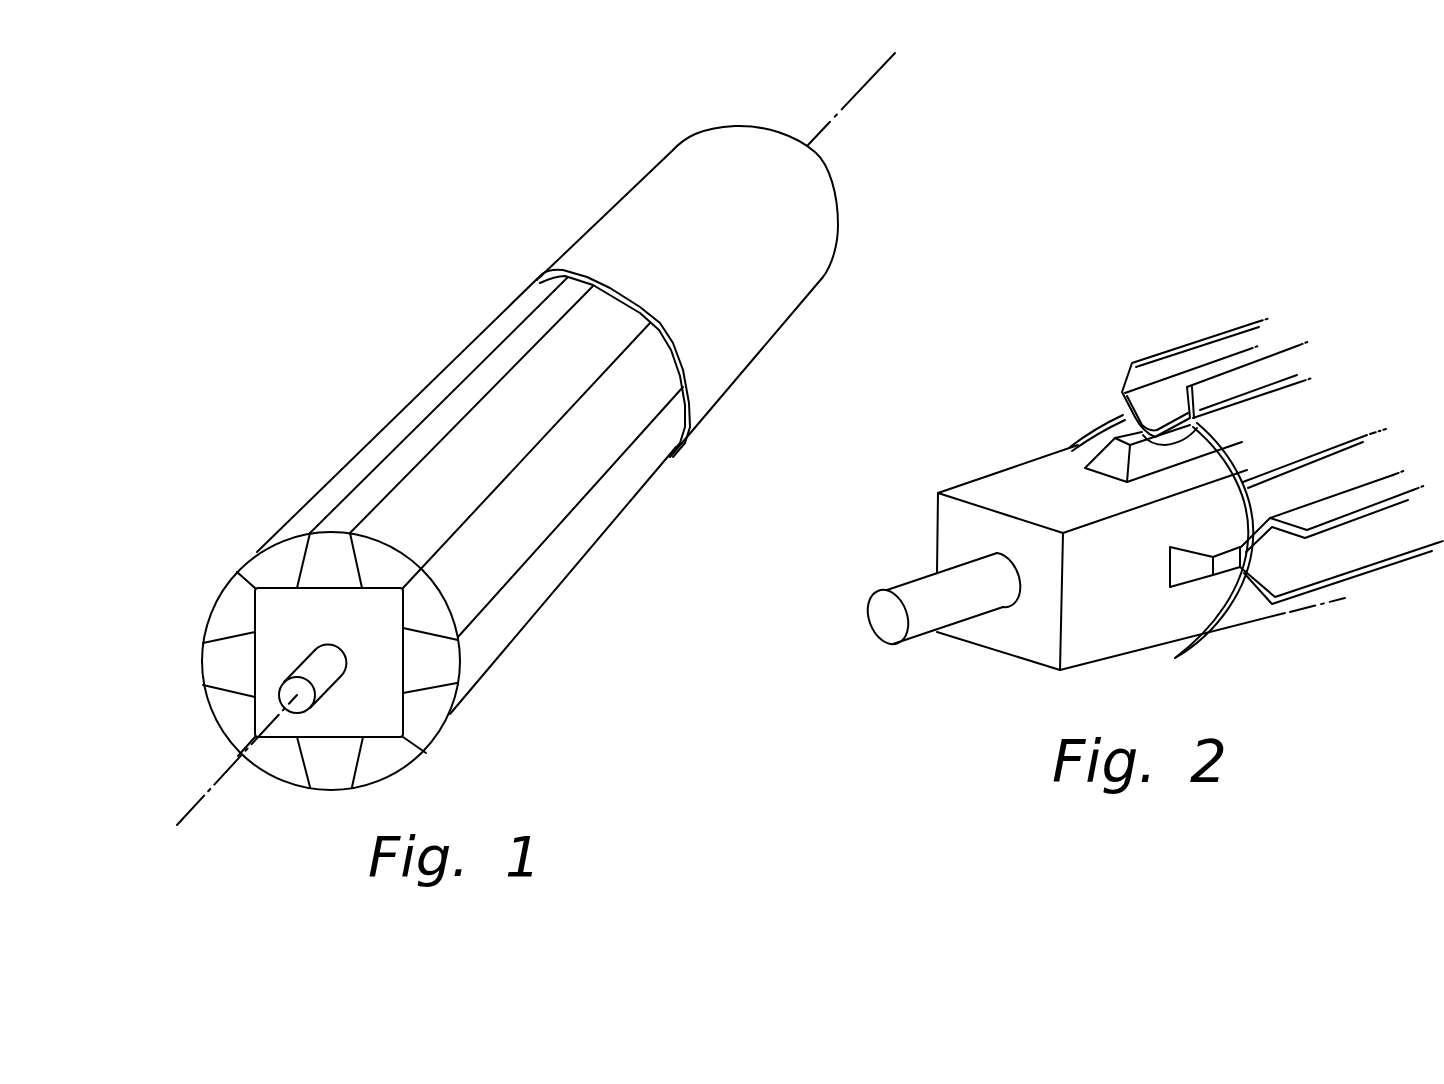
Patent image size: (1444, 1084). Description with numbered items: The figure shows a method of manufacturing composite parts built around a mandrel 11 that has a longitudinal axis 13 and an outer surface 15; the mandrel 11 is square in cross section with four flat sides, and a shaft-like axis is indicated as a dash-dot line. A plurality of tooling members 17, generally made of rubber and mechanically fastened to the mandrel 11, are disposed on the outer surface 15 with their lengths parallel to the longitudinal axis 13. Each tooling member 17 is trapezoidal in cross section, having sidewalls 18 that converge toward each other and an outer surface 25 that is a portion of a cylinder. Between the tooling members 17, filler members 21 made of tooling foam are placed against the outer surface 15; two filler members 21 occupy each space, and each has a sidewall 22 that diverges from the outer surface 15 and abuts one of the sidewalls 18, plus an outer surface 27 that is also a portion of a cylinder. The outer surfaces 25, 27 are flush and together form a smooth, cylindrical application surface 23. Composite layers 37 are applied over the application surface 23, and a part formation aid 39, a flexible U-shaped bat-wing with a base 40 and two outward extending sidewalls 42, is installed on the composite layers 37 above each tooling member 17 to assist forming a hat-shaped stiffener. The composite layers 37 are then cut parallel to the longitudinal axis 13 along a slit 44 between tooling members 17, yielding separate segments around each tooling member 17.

In FIG. 1, the mandrel 11 is at (410, 728).
In FIG. 2, the mandrel 11 is at (997, 653).
In FIG. 1, the longitudinal axis 13 is at (866, 81).
In FIG. 1, the outer surface 15 is at (455, 713).
In FIG. 2, the outer surface 15 is at (1105, 642).
In FIG. 1, the tooling members 17 is at (318, 550).
In FIG. 2, the tooling members 17 is at (1098, 452).
In FIG. 1, the sidewalls 18 is at (440, 683).
In FIG. 2, the sidewalls 18 is at (1142, 463).
In FIG. 1, the filler members 21 is at (262, 558).
In FIG. 1, the sidewall 22 is at (350, 773).
In FIG. 1, the application surface 23 is at (573, 482).
In FIG. 1, the outer surface 25 is at (407, 450).
In FIG. 2, the outer surface 25 is at (1233, 560).
In FIG. 1, the outer surface 27 is at (440, 382).
In FIG. 1, the composite layers 37 is at (696, 391).
In FIG. 2, the composite layers 37 is at (1108, 422).
In FIG. 2, the part formation aid 39 is at (1182, 347).
In FIG. 2, the base 40 is at (1205, 428).
In FIG. 2, the sidewalls 42 is at (1240, 382).
In FIG. 2, the slit 44 is at (1350, 448).